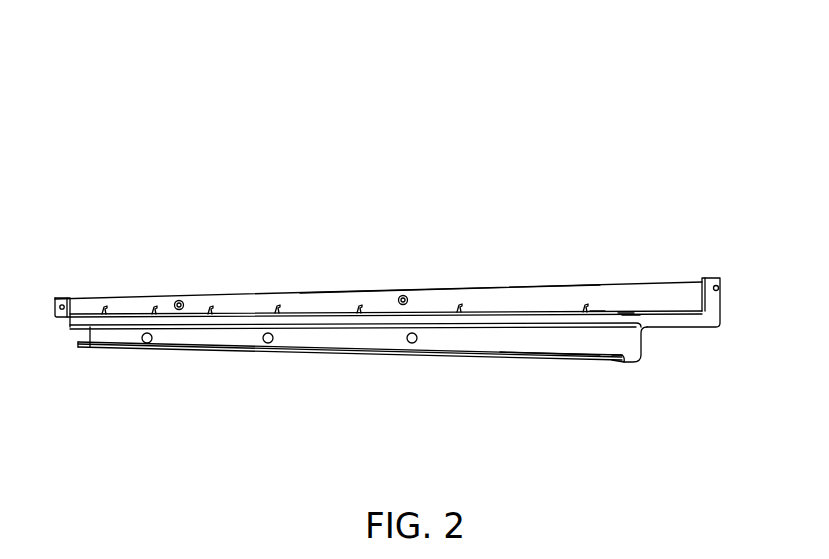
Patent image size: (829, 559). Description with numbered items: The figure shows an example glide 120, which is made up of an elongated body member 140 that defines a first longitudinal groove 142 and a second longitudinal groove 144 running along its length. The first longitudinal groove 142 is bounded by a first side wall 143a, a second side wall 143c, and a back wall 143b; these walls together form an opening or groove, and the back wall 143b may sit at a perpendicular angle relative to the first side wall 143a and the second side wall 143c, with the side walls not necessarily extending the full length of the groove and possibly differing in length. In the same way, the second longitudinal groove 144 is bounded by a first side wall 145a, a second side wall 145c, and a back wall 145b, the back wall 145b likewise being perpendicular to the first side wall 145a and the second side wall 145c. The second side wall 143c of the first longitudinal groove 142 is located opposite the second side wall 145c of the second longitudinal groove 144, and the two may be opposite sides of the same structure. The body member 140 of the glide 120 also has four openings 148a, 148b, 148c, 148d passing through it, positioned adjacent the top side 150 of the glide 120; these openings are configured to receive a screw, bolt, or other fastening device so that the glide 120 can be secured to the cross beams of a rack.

The glide 120 is at (495, 133).
The elongated body member 140 is at (320, 298).
The first longitudinal groove 142 is at (546, 313).
The first side wall 143a is at (597, 312).
The back wall 143b is at (626, 313).
The second side wall 143c is at (630, 315).
The second longitudinal groove 144 is at (372, 334).
The first side wall 145a is at (606, 363).
The back wall 145b is at (568, 340).
The second side wall 145c is at (516, 327).
The opening 148a is at (62, 298).
The opening 148b is at (718, 282).
The opening 148c is at (178, 300).
The opening 148d is at (403, 295).
The top side 150 is at (447, 288).